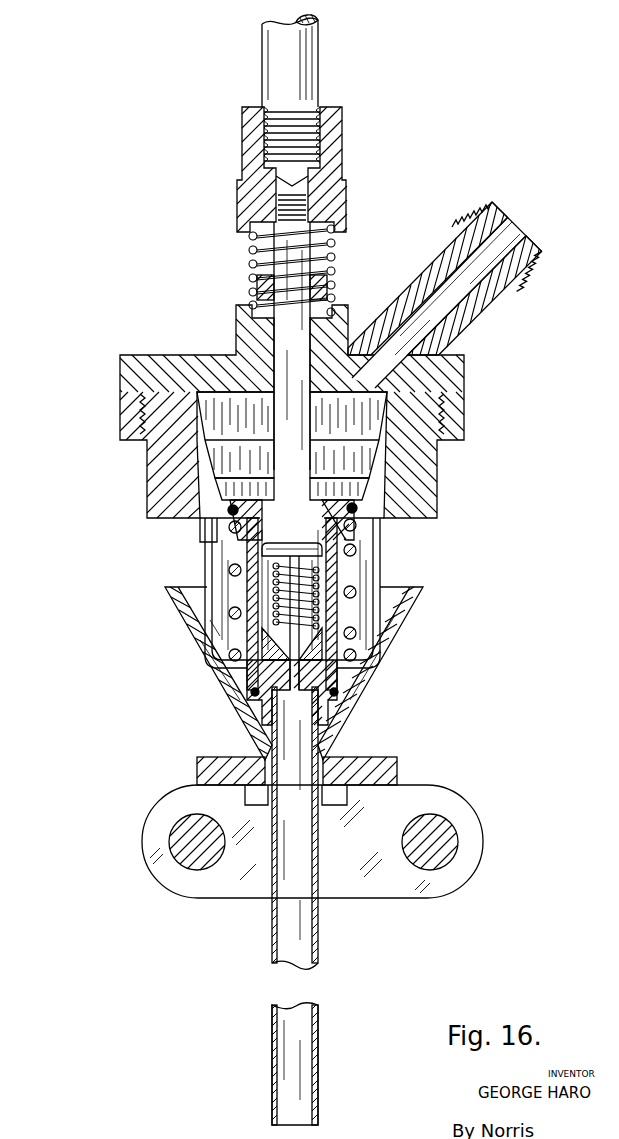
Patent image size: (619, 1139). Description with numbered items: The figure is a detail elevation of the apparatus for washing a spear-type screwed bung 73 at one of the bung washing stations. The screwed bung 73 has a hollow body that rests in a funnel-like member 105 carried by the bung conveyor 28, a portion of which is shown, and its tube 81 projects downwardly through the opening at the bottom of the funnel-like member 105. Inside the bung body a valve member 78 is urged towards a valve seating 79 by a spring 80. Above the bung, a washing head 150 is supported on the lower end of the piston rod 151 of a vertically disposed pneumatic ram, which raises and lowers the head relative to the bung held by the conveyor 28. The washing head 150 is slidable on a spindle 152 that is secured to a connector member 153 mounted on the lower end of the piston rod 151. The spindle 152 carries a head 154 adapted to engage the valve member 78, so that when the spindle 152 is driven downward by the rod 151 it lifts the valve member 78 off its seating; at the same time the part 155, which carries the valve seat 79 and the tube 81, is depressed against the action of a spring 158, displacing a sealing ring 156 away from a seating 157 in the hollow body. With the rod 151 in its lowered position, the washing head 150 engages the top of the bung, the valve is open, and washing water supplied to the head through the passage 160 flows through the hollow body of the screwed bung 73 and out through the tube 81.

The bung conveyor 28 is at (412, 898).
The screwed bung 73 is at (210, 615).
The valve member 78 is at (340, 566).
The valve seating 79 is at (337, 541).
The spring 80 is at (306, 616).
The tube 81 is at (272, 943).
The funnel-like member 105 is at (414, 616).
The washing head 150 is at (118, 390).
The piston rod 151 is at (312, 58).
The spindle 152 is at (290, 354).
The connector member 153 is at (343, 123).
The head 154 is at (213, 479).
The part 155 is at (243, 594).
The sealing ring 156 is at (355, 511).
The seating 157 is at (230, 509).
The spring 158 is at (238, 596).
The passage 160 is at (513, 228).